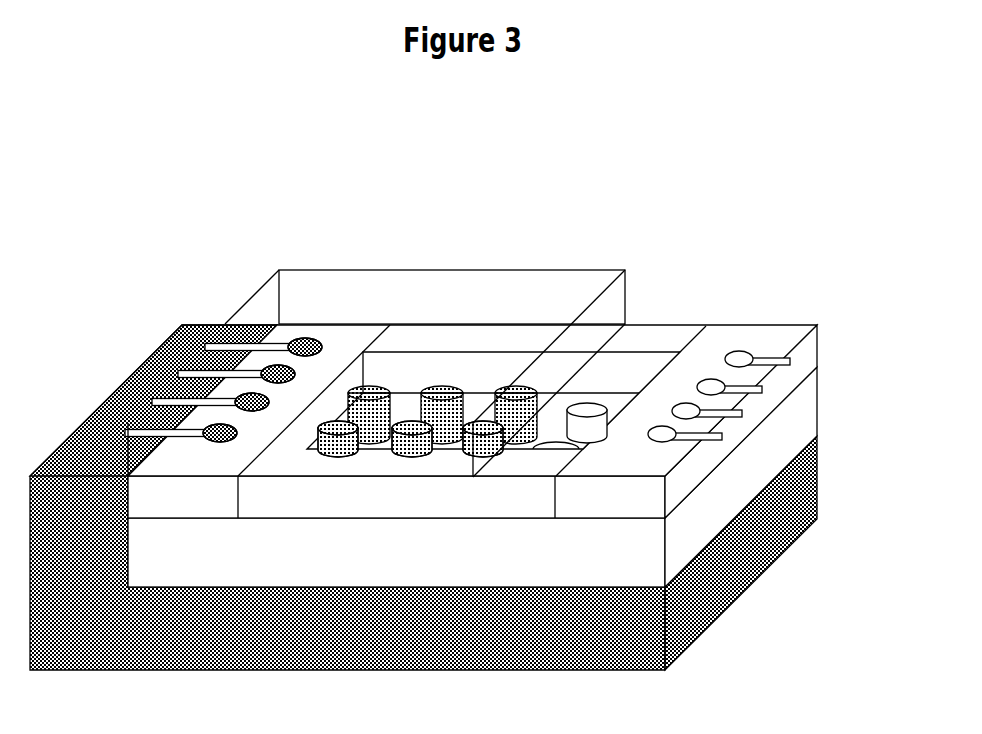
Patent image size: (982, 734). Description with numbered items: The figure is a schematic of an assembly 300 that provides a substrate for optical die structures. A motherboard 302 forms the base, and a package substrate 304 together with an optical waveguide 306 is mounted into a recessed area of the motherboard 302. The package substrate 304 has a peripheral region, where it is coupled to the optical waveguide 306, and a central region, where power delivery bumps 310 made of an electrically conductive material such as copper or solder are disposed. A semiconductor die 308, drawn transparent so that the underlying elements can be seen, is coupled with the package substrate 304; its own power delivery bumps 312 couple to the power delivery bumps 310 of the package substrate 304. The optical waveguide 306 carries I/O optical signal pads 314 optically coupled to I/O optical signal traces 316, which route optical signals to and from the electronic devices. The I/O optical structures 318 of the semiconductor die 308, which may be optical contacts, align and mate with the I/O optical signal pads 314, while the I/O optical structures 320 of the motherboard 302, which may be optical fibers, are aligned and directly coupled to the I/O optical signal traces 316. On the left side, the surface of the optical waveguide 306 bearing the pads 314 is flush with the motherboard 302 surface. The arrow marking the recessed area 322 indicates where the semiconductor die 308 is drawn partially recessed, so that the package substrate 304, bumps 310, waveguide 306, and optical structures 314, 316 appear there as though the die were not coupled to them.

The assembly 300 is at (612, 155).
The motherboard 302 is at (400, 640).
The package substrate 304 is at (400, 568).
The optical waveguide 306 is at (210, 510).
The semiconductor die 308 is at (417, 270).
The power delivery bumps of the package substrate 310 is at (587, 404).
The power delivery bumps of the semiconductor die 312 is at (371, 387).
The I/O optical signal pads 314 is at (742, 357).
The I/O optical signal traces 316 is at (253, 325).
The I/O optical structures of the semiconductor die 318 is at (302, 338).
The I/O optical structures of the motherboard 320 is at (150, 375).
The recessed area 322 is at (810, 297).